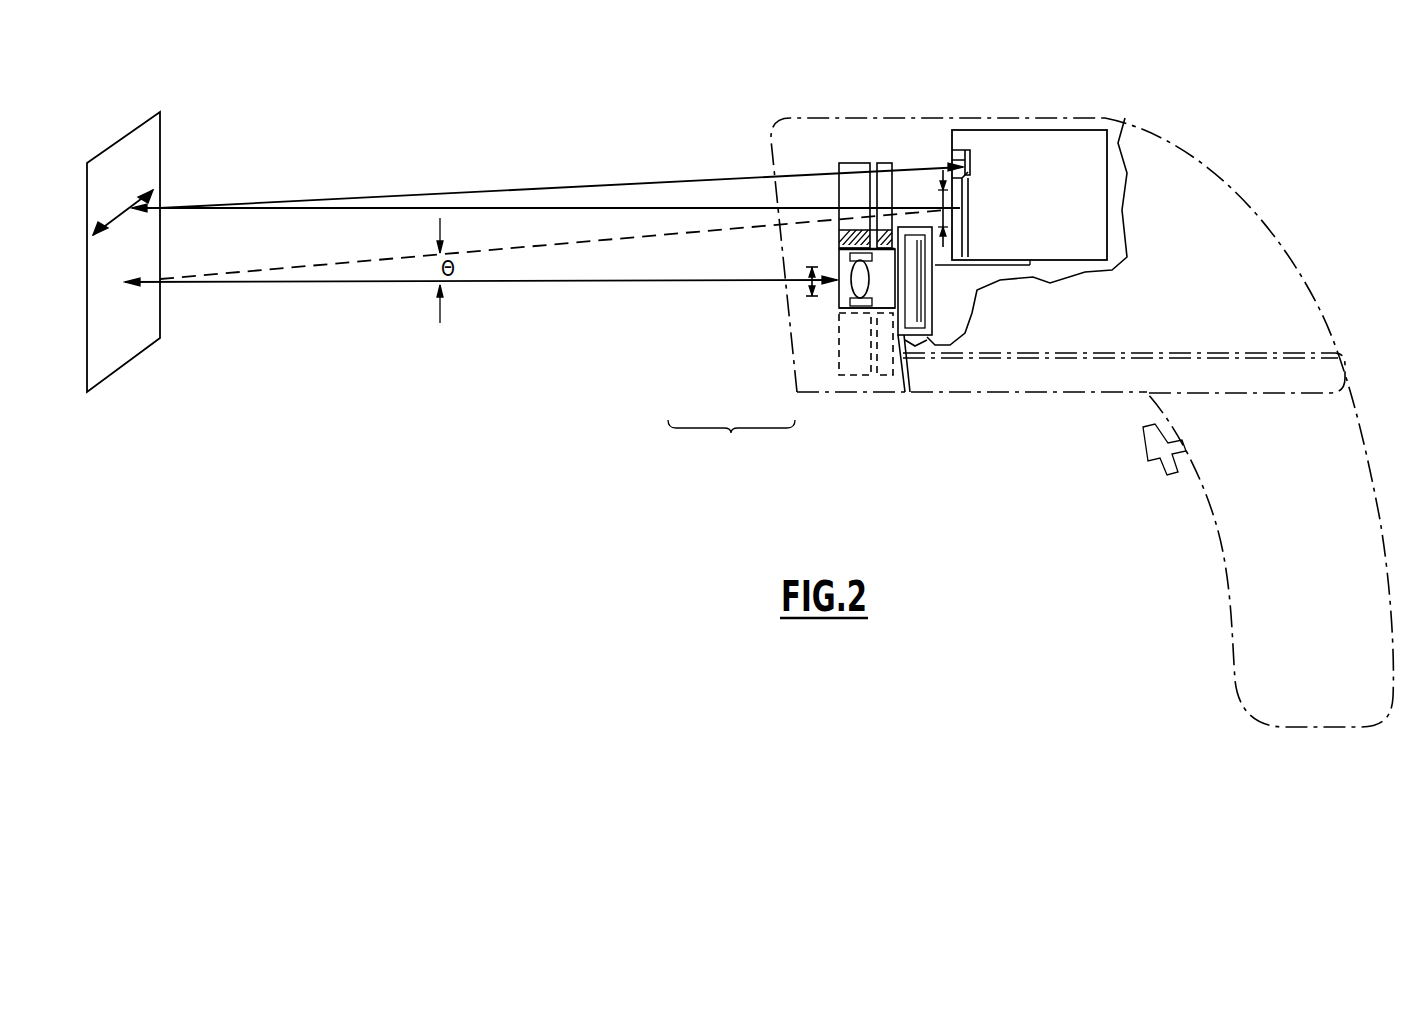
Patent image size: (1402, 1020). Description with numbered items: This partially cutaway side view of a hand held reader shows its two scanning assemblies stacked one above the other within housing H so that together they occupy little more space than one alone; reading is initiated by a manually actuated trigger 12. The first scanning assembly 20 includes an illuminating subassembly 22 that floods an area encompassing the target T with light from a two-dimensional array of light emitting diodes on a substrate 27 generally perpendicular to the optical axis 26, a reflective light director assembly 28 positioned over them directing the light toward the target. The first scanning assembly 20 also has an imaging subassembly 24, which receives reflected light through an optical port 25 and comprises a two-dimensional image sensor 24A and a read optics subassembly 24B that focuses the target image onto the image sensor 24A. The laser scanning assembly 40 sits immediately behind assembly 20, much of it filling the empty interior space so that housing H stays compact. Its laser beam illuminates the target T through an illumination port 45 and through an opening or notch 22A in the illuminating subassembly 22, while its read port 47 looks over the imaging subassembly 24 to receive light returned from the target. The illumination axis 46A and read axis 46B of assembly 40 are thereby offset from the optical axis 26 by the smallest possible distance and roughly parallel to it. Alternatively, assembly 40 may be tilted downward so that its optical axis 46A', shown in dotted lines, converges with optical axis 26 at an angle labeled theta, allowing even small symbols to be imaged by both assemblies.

The target T is at (162, 128).
The illumination axis 46A is at (526, 190).
The read axis 46B is at (573, 185).
The downwardly tilted optical axis 46A' is at (552, 244).
The optical axis 26 is at (593, 283).
The optical port 25 is at (812, 288).
The reflective light director assembly 28 is at (840, 352).
The read optics subassembly 24B is at (857, 286).
The image sensor 24A is at (880, 318).
The imaging subassembly 24 is at (731, 443).
The illuminating subassembly 22 is at (862, 385).
The substrate 27 is at (894, 393).
The first scanning assembly 20 is at (946, 306).
The opening or notch 22A is at (884, 180).
The optical illumination port 45 is at (943, 180).
The read port 47 is at (975, 158).
The second scanning assembly 40 is at (1087, 117).
The housing H is at (1290, 245).
The trigger 12 is at (1160, 467).